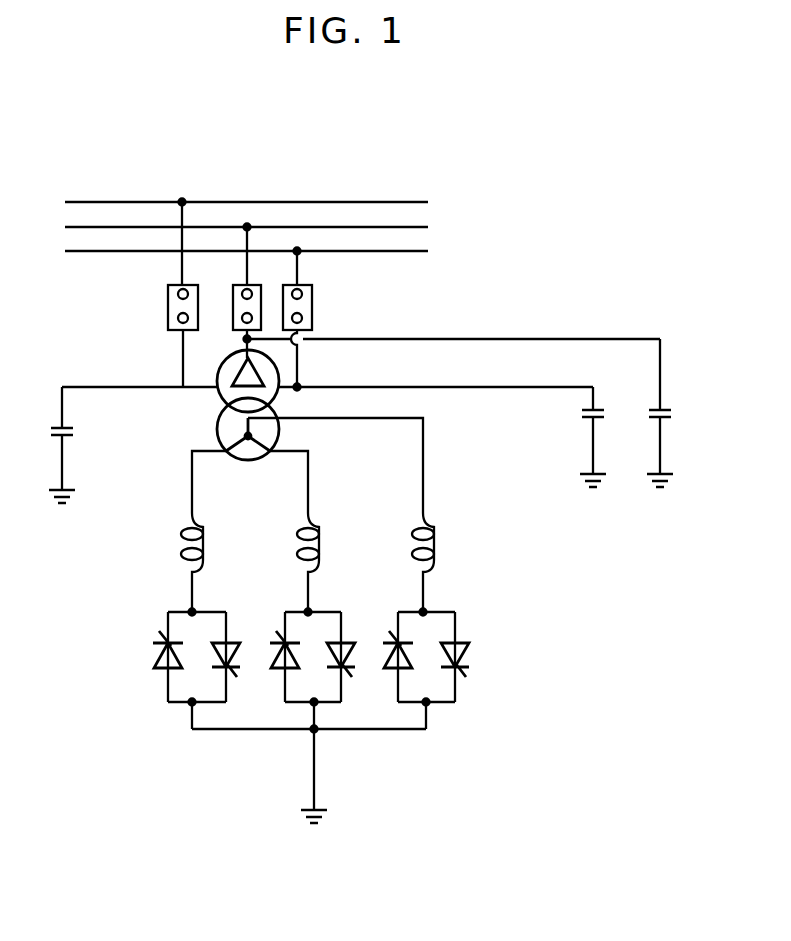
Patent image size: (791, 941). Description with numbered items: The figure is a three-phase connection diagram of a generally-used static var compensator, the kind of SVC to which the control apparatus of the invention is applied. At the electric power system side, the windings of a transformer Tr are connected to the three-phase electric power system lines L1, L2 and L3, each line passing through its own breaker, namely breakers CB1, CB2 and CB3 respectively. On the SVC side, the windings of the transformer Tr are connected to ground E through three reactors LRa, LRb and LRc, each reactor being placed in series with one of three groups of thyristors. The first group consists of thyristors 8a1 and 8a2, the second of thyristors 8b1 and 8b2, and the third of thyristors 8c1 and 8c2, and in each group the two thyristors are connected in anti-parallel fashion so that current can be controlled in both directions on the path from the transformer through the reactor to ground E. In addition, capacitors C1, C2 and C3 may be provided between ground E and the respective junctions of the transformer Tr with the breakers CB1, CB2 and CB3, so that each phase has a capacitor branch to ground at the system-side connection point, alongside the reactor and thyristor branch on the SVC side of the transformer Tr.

The electric power system line L1 is at (412, 200).
The electric power system line L2 is at (408, 225).
The electric power system line L3 is at (408, 251).
The breaker CB1 is at (168, 300).
The breaker CB2 is at (233, 300).
The breaker CB3 is at (312, 305).
The transformer Tr is at (265, 405).
The capacitor C1 is at (82, 438).
The capacitor C2 is at (675, 406).
The capacitor C3 is at (608, 430).
The ground E is at (347, 640).
The reactor LRa is at (433, 547).
The reactor LRb is at (318, 547).
The reactor LRc is at (203, 547).
The thyristor 8a1 is at (466, 643).
The thyristor 8a2 is at (393, 670).
The thyristor 8b1 is at (343, 640).
The thyristor 8b2 is at (280, 670).
The thyristor 8c1 is at (232, 640).
The thyristor 8c2 is at (155, 662).